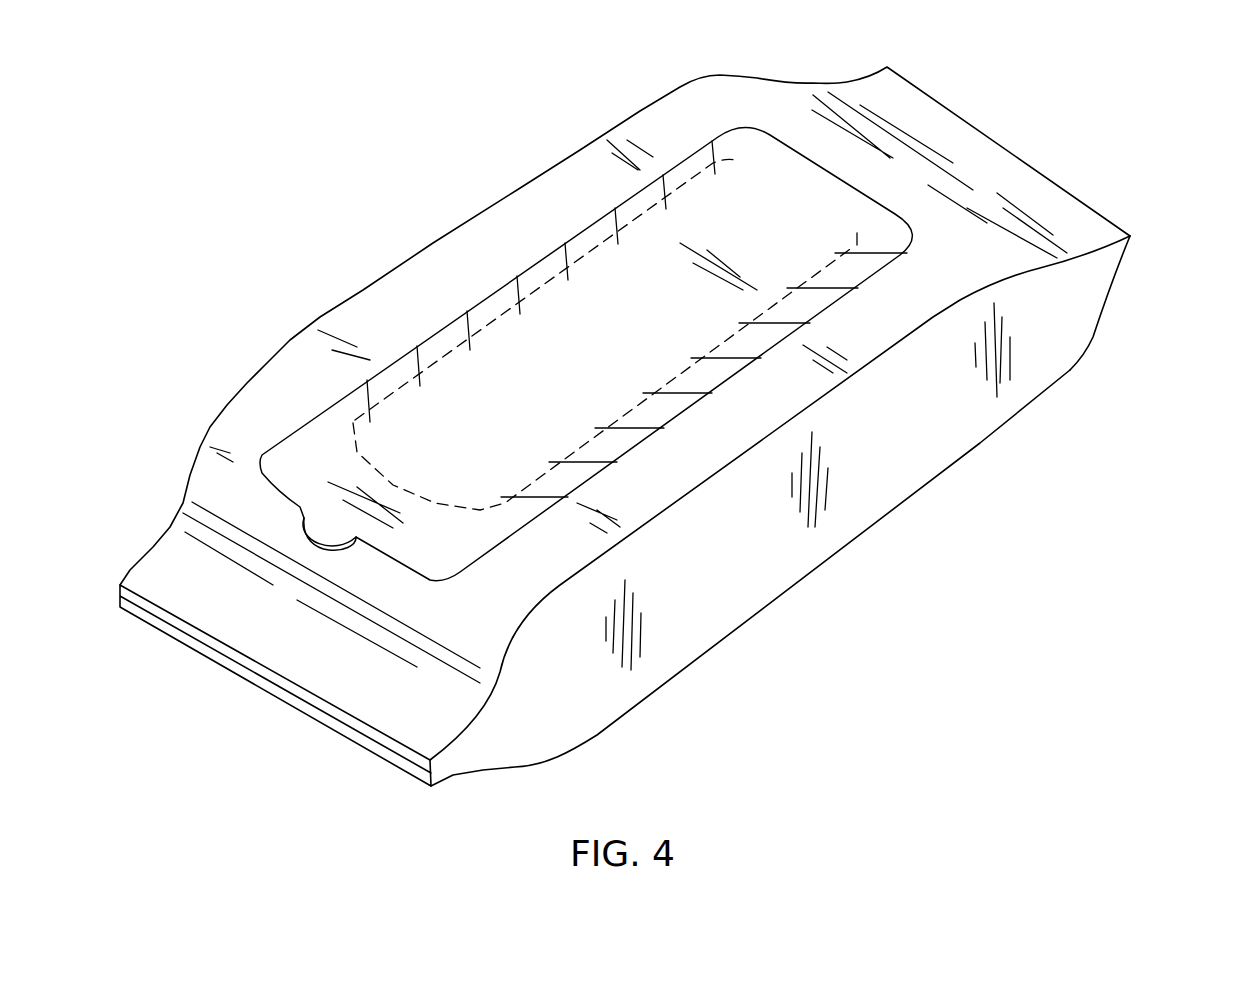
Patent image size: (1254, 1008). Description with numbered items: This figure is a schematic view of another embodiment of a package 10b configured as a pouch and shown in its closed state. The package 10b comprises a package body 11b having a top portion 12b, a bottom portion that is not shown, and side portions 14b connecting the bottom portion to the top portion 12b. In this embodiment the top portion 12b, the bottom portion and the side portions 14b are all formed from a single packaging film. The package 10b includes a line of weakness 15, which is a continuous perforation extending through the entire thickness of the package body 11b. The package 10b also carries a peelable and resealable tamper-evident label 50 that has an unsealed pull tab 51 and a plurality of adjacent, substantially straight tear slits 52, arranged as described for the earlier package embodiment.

The package 10b is at (487, 119).
The package body 11b is at (953, 244).
The top portion 12b is at (380, 320).
The side portions 14b is at (1040, 320).
The line of weakness 15 is at (700, 372).
The peelable/resealable tamper-evident label 50 is at (300, 447).
The unsealed pull tab 51 is at (327, 527).
The tear slits 52 is at (490, 295).